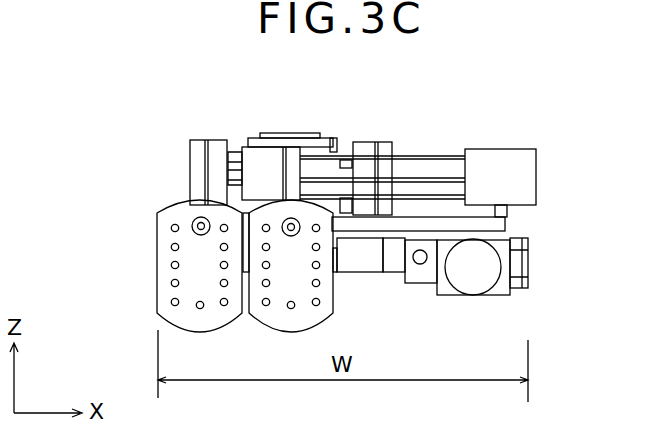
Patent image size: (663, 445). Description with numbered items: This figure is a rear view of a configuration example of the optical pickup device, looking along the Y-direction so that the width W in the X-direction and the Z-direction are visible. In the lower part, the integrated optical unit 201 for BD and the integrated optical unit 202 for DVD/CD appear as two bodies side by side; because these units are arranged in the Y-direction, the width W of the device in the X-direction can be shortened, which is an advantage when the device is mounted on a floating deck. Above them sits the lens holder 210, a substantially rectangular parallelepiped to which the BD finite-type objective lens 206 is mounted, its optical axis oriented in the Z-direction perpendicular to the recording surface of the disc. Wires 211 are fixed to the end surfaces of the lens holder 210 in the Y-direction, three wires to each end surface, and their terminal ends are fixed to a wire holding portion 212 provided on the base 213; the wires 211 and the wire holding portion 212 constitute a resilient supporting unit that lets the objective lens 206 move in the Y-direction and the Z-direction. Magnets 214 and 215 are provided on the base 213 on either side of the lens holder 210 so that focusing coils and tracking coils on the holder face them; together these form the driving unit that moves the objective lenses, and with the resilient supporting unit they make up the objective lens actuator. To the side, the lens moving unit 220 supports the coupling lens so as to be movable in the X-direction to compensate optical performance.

The integrated optical unit for BD 201 is at (330, 297).
The integrated optical unit for DVD/CD 202 is at (167, 257).
The BD finite-type objective lens 206 is at (296, 133).
The lens holder 210 is at (260, 185).
The wires 211 is at (445, 192).
The wire holding portion 212 is at (523, 178).
The base 213 is at (505, 223).
The magnet 214 is at (217, 152).
The magnet 215 is at (367, 150).
The lens moving unit 220 is at (528, 265).